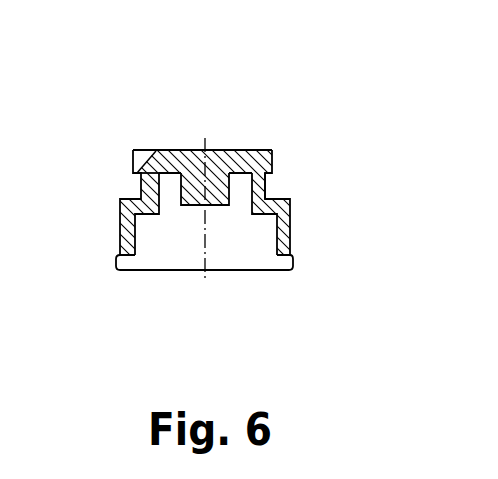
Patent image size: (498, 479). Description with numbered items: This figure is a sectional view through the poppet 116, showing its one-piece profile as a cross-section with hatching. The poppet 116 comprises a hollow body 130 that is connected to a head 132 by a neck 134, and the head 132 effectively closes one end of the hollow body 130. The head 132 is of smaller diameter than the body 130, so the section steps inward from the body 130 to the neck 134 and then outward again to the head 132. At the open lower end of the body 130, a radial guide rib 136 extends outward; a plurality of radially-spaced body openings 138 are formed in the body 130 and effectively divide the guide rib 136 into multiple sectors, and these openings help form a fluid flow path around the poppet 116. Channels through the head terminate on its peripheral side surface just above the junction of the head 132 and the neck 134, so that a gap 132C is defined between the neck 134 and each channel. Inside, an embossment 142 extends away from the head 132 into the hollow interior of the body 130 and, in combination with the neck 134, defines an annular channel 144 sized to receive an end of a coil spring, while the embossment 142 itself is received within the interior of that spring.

The poppet 116 is at (218, 103).
The hollow body 130 is at (117, 222).
The head 132 is at (236, 147).
The gap 132C is at (138, 174).
The neck 134 is at (268, 192).
The radial guide rib 136 is at (117, 270).
The body openings 138 is at (280, 266).
The embossment 142 is at (188, 205).
The annular channel 144 is at (168, 183).